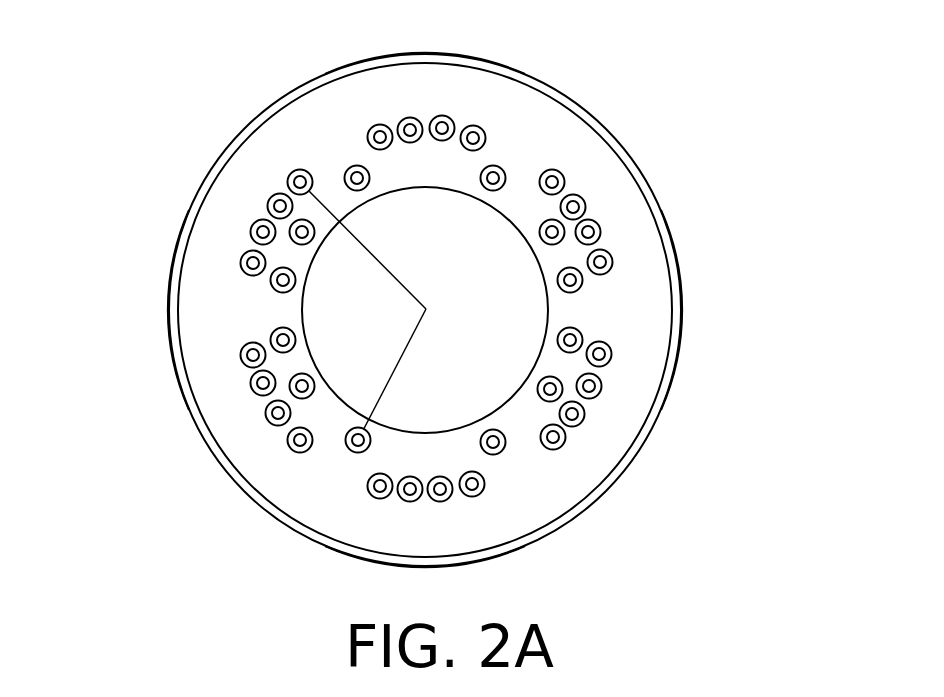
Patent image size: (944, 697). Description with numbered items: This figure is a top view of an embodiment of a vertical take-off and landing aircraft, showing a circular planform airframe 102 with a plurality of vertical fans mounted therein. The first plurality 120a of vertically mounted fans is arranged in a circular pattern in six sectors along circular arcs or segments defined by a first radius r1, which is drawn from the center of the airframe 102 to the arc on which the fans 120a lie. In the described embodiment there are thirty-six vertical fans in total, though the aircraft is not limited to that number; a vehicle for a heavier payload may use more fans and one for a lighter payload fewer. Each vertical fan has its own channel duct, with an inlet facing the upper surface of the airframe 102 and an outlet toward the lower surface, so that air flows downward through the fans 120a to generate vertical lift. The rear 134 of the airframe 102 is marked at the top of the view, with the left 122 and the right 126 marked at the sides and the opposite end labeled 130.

The circular planform airframe 102 is at (670, 112).
The first plurality of vertically mounted fans 120a is at (250, 250).
The rear 134 is at (419, 32).
The bottom side 130 is at (459, 606).
The right 126 is at (76, 336).
The left 122 is at (838, 320).
The first radius r1 is at (367, 309).